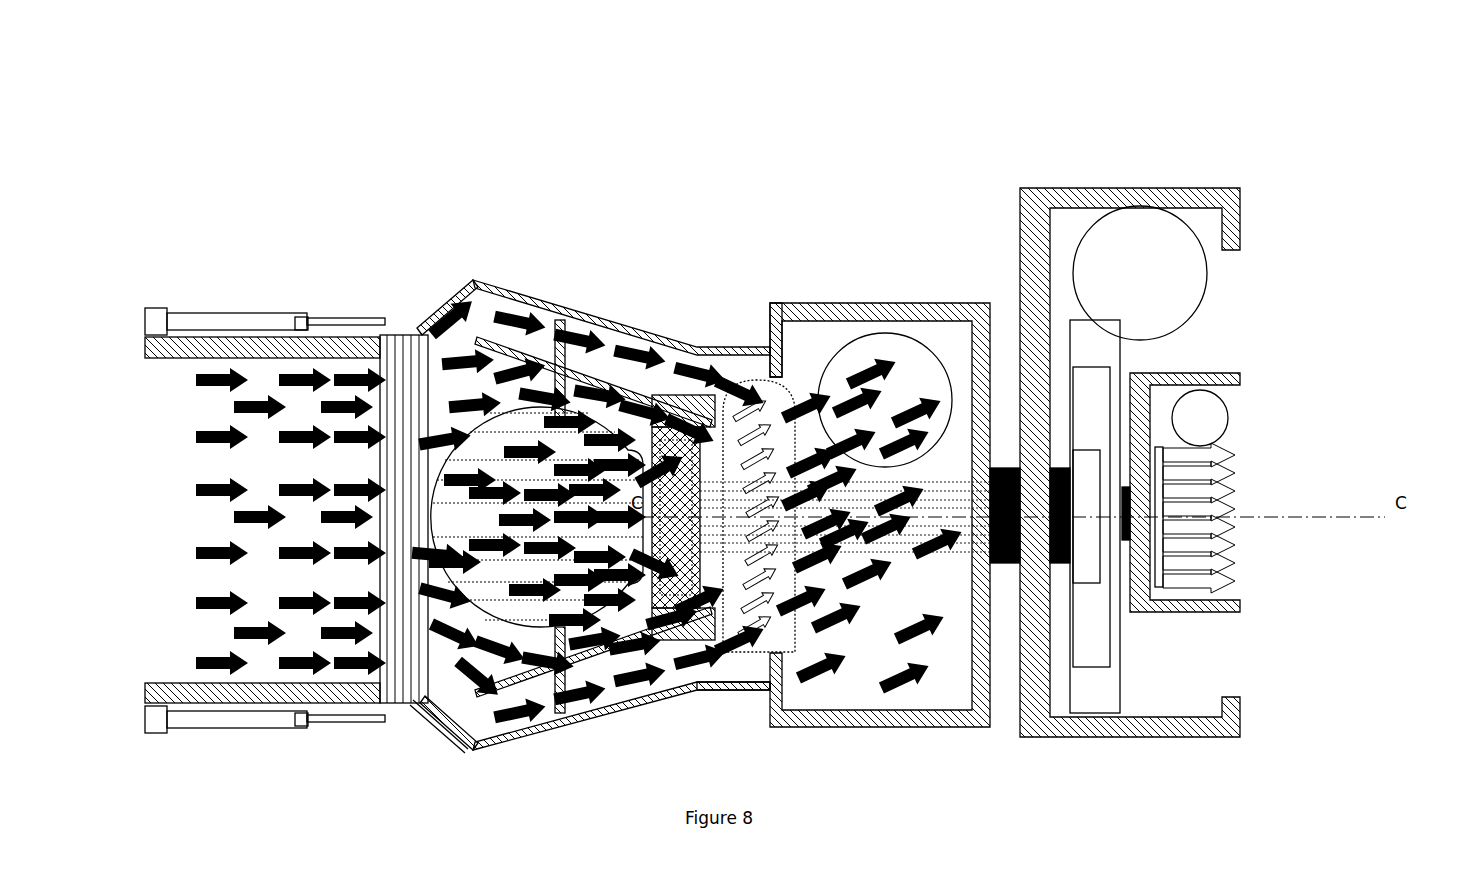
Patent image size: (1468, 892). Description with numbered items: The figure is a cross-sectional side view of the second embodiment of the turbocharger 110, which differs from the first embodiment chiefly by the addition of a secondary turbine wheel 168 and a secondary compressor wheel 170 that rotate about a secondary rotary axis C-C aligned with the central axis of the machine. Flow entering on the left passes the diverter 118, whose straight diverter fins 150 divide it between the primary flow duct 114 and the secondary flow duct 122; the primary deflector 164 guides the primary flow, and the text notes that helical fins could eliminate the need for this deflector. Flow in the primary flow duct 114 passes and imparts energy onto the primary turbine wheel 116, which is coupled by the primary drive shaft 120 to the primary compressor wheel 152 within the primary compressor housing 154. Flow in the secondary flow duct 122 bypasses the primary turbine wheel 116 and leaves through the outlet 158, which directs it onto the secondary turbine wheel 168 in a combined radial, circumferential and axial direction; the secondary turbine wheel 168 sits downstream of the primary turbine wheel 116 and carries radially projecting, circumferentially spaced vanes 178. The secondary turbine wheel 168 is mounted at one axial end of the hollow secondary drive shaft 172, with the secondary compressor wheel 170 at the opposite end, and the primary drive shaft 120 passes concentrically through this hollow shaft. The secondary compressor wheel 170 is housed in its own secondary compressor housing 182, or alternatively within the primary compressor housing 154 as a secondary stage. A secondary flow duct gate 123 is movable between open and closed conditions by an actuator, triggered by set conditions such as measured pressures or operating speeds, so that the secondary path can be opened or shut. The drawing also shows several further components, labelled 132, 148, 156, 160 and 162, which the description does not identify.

The turbocharger 110 is at (1316, 131).
The primary flow duct 114 is at (360, 445).
The primary turbine wheel 116 is at (690, 696).
The diverter 118 is at (447, 480).
The primary drive shaft 120 is at (890, 555).
The secondary flow duct 122 is at (578, 332).
The secondary flow duct gate 123 is at (413, 707).
The fan 132 is at (885, 350).
The support post 148 is at (590, 718).
The diverter fins 150 is at (460, 735).
The primary compressor wheel 152 is at (1115, 347).
The primary compressor housing 154 is at (1242, 195).
The inlet tube housing 156 is at (445, 320).
The outlet 158 is at (735, 350).
The collecting lens 160 is at (440, 515).
The lens holder 162 is at (680, 395).
The primary deflector 164 is at (645, 705).
The secondary turbine wheel 168 is at (790, 410).
The secondary compressor wheel 170 is at (1200, 570).
The secondary drive shaft 172 is at (962, 555).
The vanes 178 is at (775, 608).
The secondary compressor housing 182 is at (1215, 372).